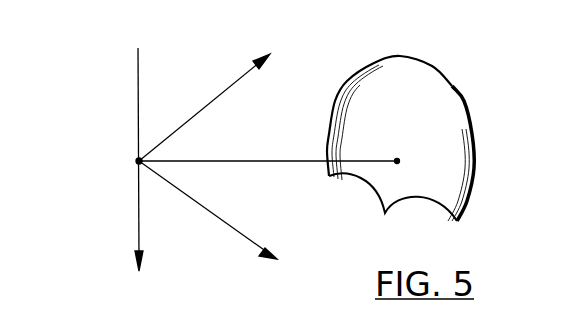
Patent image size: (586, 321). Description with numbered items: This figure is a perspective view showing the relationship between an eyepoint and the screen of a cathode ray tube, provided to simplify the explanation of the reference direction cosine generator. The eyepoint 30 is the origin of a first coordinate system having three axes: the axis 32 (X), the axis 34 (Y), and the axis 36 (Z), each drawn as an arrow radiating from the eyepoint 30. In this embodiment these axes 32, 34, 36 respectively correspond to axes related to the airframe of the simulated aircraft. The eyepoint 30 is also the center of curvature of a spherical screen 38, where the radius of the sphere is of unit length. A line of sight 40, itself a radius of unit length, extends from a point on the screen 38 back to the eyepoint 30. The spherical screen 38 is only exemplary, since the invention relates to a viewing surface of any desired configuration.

The eyepoint 30 is at (135, 158).
The X axis 32 is at (204, 103).
The Y axis 34 is at (220, 218).
The Z axis 36 is at (136, 205).
The spherical screen 38 is at (447, 78).
The line of sight 40 is at (267, 160).